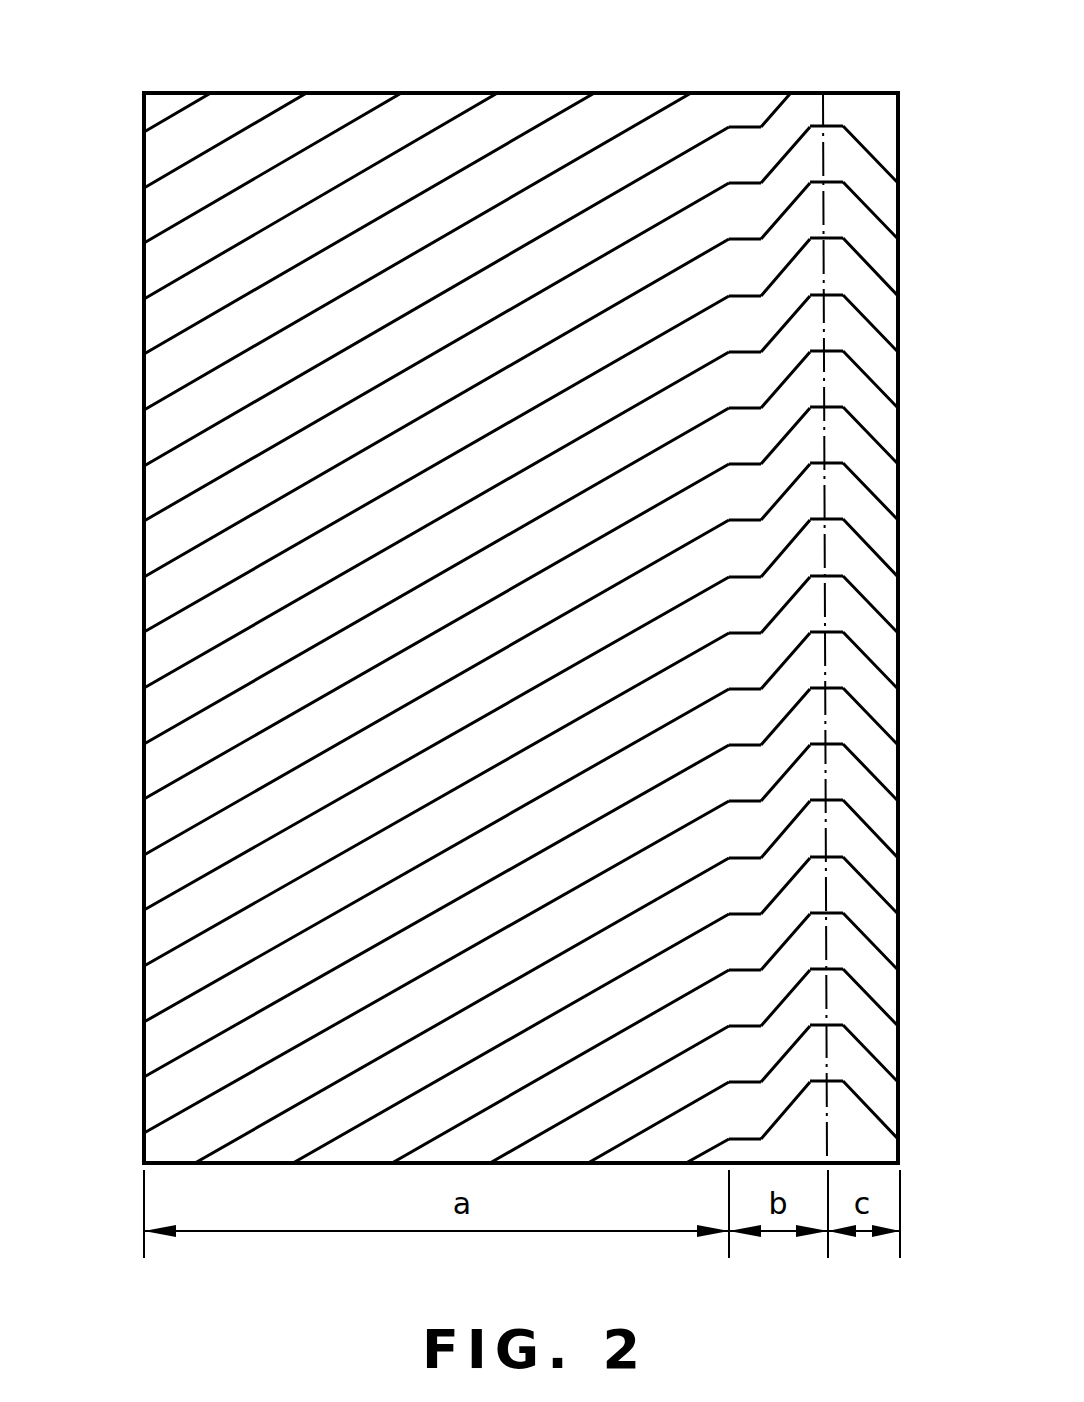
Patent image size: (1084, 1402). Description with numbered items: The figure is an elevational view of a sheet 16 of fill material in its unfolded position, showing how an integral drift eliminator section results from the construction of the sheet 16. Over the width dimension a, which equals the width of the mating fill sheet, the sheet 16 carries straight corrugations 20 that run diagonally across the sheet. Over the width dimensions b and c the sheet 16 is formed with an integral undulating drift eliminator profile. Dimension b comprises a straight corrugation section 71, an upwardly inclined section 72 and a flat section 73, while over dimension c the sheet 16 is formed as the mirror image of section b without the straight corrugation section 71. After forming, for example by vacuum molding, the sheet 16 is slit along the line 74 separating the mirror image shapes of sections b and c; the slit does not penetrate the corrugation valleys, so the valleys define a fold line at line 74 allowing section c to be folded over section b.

The sheet 16 is at (143, 160).
The straight corrugations 20 is at (258, 118).
The straight corrugation section 71 is at (740, 516).
The upwardly inclined section 72 is at (790, 485).
The flat section 73 is at (829, 456).
The slit line 74 is at (870, 632).